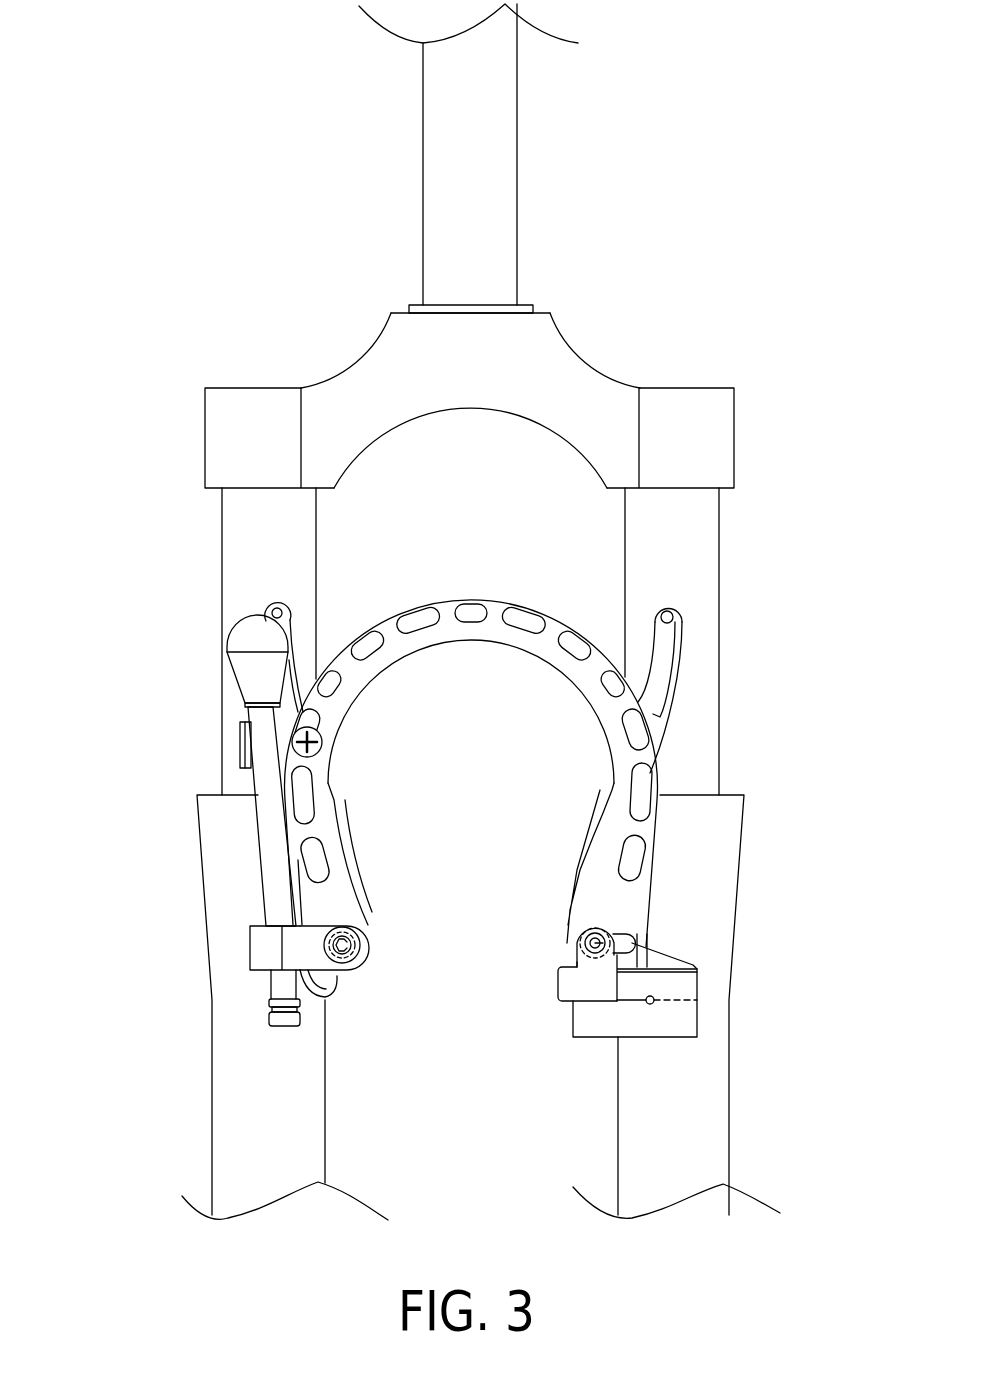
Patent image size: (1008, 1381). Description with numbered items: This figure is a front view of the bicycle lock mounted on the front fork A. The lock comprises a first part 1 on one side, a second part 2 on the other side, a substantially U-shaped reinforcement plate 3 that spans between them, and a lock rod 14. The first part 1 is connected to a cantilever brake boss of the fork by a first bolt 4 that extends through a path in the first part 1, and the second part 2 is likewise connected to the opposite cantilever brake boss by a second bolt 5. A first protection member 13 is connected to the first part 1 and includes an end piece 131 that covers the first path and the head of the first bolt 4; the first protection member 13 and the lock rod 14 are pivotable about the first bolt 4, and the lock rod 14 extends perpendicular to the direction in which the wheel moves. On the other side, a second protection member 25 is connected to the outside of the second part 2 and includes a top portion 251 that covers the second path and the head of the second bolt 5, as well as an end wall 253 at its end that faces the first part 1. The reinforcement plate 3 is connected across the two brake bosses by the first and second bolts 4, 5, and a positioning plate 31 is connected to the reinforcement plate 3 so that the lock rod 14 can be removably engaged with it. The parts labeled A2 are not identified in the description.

The front fork A is at (533, 360).
The spring arm A2 is at (270, 608).
The reinforcement plate 3 is at (455, 603).
The positioning plate 31 is at (242, 747).
The lock rod 14 is at (270, 842).
The first protection member 13 is at (245, 1012).
The first part 1 is at (245, 1012).
The first bolt 4 is at (327, 953).
The end piece 131 is at (365, 968).
The top portion 251 is at (598, 927).
The second bolt 5 is at (632, 940).
The second part 2 is at (665, 1024).
The second protection member 25 is at (592, 988).
The end wall 253 is at (558, 980).